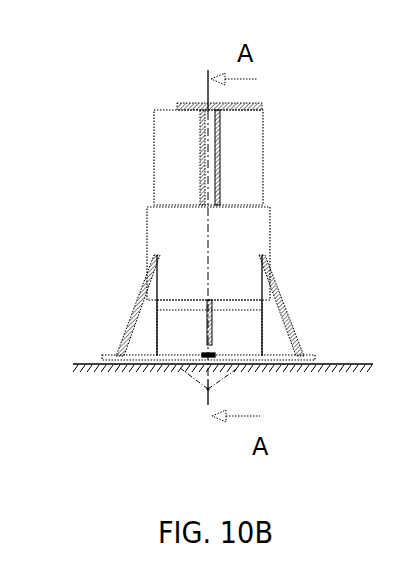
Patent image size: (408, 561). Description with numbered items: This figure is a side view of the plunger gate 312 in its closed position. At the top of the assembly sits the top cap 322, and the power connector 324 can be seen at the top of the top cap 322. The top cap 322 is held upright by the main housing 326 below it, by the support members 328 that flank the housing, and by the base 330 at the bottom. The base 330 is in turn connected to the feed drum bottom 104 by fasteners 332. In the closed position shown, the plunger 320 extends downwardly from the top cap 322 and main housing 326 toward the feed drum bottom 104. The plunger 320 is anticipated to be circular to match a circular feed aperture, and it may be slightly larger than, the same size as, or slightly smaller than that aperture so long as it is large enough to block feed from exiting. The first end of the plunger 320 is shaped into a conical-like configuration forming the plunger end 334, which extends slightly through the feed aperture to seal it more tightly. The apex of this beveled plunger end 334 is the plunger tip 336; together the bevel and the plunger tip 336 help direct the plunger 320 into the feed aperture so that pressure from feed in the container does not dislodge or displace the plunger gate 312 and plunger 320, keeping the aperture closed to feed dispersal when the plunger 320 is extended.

The plunger gate 312 is at (148, 92).
The feed drum bottom 104 is at (80, 363).
The plunger 320 is at (157, 328).
The top cap 322 is at (265, 138).
The power connector 324 is at (238, 103).
The main housing 326 is at (283, 218).
The support members 328 is at (282, 302).
The base 330 is at (303, 358).
The fasteners 332 is at (178, 366).
The plunger end 334 is at (233, 378).
The plunger tip 336 is at (207, 390).